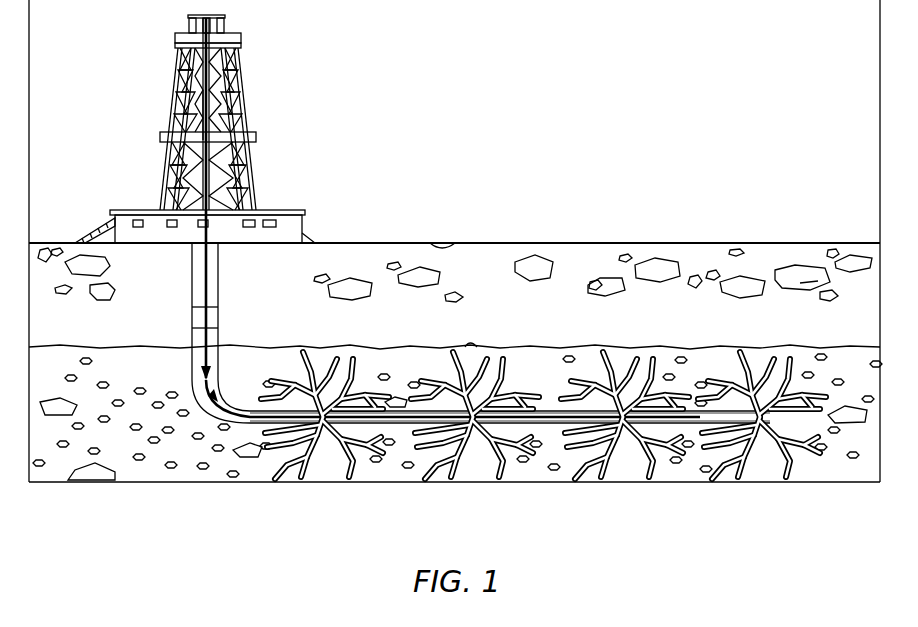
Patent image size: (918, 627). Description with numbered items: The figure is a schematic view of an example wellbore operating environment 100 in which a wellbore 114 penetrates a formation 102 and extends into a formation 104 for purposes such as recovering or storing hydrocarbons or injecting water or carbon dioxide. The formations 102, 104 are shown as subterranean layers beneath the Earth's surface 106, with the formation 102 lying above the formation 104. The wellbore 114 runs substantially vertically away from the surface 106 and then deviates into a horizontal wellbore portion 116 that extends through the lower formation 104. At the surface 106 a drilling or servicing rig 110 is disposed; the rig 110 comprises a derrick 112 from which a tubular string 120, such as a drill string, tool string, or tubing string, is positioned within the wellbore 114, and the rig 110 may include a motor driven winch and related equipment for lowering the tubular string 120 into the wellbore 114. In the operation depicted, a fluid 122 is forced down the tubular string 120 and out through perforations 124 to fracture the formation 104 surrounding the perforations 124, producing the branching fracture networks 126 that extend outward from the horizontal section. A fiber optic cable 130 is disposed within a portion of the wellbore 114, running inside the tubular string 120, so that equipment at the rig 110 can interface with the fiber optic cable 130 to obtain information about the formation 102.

The operating environment 100 is at (393, 72).
The formation 102 is at (485, 286).
The formation 104 is at (563, 382).
The Earth's surface 106 is at (390, 243).
The drilling or servicing rig 110 is at (262, 108).
The derrick 112 is at (177, 123).
The wellbore 114 is at (190, 270).
The deviated or horizontal wellbore portion 116 is at (397, 356).
The tubular string 120 is at (208, 293).
The fluid 122 is at (197, 384).
The perforations 124 is at (482, 440).
The fracture network 126 is at (640, 470).
The fiber optic (FO) cable 130 is at (403, 424).